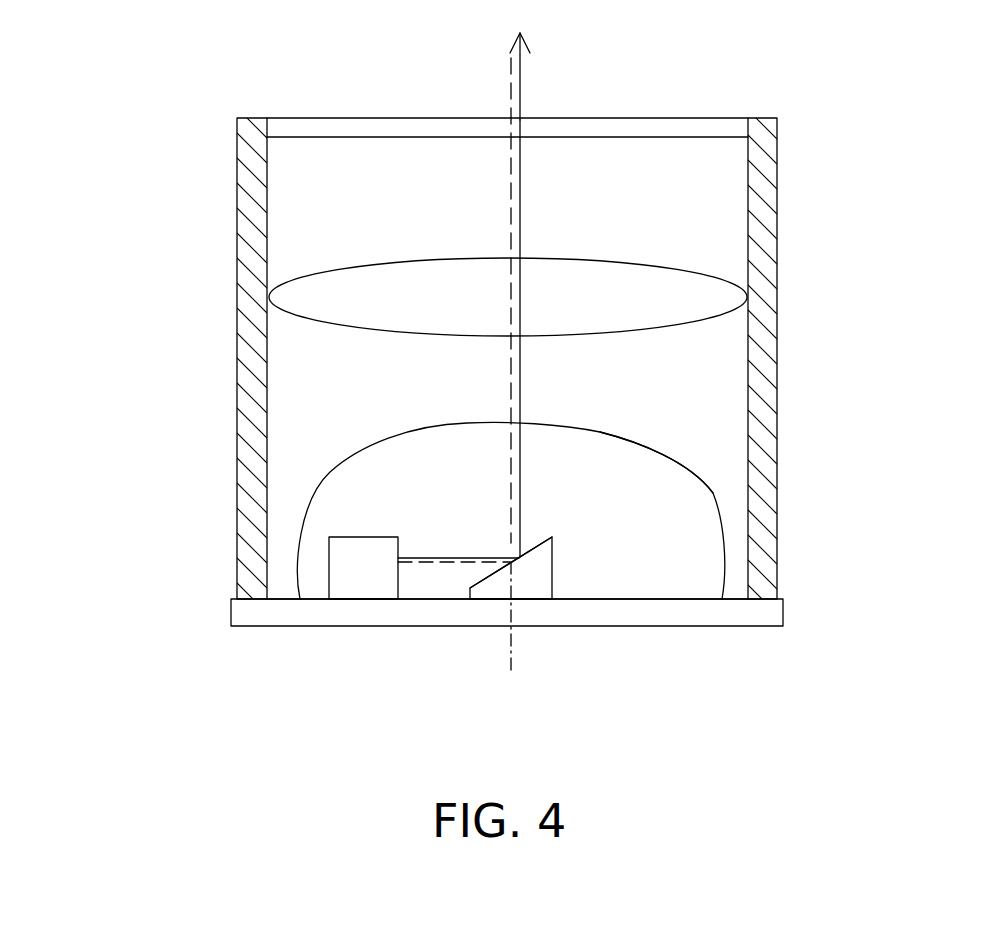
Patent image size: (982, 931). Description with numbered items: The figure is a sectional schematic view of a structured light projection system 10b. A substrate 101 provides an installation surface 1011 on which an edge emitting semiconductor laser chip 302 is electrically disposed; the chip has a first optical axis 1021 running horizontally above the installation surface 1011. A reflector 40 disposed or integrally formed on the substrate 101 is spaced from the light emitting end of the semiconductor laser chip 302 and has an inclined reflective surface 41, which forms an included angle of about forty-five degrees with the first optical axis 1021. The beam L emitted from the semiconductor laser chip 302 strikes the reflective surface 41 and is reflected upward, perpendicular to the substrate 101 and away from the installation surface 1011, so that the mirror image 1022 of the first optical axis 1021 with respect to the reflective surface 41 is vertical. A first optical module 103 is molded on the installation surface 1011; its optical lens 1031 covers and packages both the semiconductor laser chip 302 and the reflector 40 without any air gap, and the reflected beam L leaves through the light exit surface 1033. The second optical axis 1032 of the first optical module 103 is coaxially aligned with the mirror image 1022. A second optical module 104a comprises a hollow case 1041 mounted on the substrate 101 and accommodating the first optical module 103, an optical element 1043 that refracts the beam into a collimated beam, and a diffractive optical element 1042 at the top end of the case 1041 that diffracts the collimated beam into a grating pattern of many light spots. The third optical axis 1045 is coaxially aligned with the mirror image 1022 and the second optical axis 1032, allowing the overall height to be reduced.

The structured light projection system 10b is at (790, 703).
The substrate 101 is at (670, 607).
The installation surface 1011 is at (692, 600).
The first optical module 103 is at (873, 402).
The optical lens 1031 is at (705, 528).
The second optical axis 1032 is at (523, 384).
The light exit surface 1033 is at (680, 462).
The second optical module 104a is at (873, 48).
The case 1041 is at (760, 208).
The diffractive optical element 1042 is at (713, 127).
The optical element 1043 is at (710, 297).
The third optical axis 1045 is at (512, 88).
The semiconductor laser chip 302 is at (361, 588).
The reflector 40 is at (542, 575).
The reflective surface 41 is at (533, 521).
The first optical axis 1021 is at (442, 562).
The mirror image of the first optical axis 1022 is at (512, 640).
The beam L is at (450, 558).